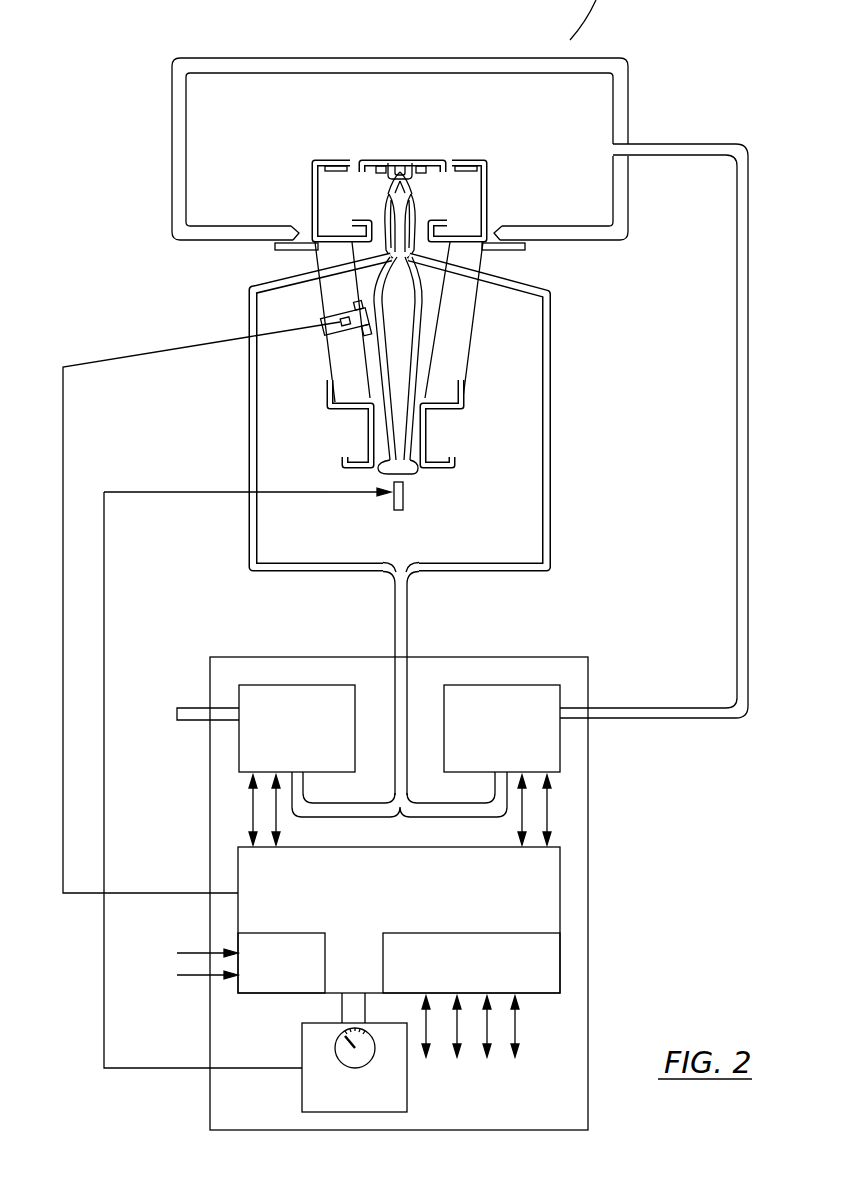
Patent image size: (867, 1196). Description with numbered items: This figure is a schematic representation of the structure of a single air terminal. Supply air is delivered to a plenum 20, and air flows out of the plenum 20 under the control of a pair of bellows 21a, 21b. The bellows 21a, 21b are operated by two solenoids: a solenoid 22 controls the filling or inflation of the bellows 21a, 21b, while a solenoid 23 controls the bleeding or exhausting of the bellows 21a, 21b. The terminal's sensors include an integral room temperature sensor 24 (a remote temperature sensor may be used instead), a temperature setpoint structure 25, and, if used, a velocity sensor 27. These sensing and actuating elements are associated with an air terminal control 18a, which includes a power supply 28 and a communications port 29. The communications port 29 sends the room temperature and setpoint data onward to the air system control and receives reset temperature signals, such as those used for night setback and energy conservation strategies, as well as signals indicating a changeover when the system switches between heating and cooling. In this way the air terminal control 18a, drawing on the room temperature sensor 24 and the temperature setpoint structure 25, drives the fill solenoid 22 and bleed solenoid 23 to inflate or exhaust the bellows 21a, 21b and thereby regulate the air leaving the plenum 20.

The plenum 20 is at (433, 120).
The bellows 21a is at (387, 223).
The bellows 21b is at (413, 223).
The solenoid 22 is at (515, 685).
The solenoid 23 is at (264, 685).
The integral room temperature sensor 24 is at (403, 497).
The temperature setpoint structure 25 is at (302, 1052).
The velocity sensor 27 is at (345, 326).
The power supply 28 is at (291, 933).
The communications port 29 is at (480, 932).
The air terminal control 18a is at (427, 878).